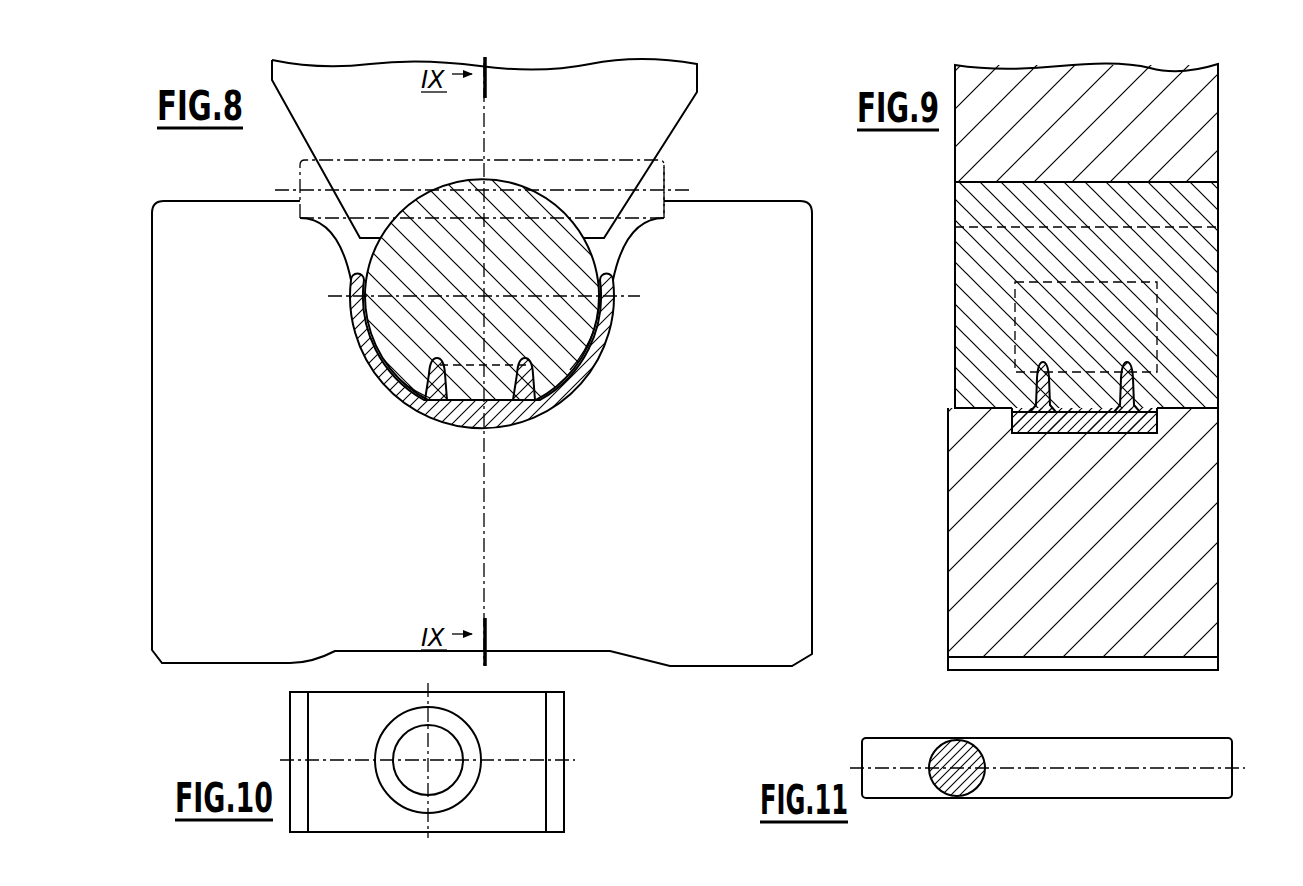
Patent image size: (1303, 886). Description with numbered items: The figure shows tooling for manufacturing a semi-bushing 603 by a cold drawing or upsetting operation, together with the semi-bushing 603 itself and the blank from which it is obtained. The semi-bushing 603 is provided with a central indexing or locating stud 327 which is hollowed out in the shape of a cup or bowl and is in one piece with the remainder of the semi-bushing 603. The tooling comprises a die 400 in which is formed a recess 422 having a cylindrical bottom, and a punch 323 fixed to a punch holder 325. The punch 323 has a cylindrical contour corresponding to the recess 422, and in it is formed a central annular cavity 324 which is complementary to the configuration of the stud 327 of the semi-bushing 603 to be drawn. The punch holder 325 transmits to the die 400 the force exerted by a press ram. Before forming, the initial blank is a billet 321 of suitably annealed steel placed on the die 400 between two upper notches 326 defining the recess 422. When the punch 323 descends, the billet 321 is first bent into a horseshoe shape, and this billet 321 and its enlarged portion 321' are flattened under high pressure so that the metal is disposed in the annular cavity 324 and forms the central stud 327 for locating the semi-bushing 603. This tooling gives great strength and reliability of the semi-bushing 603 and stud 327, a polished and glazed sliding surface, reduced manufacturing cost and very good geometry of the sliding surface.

In FIG. 8, the billet 321 is at (482, 163).
In FIG. 11, the billet 321 is at (1047, 751).
In FIG. 11, the enlarged portion 321' is at (936, 749).
In FIG. 8, the punch 323 is at (400, 315).
In FIG. 9, the punch 323 is at (1135, 305).
In FIG. 8, the central annular cavity 324 is at (420, 364).
In FIG. 8, the punch holder 325 is at (672, 97).
In FIG. 9, the punch holder 325 is at (1195, 96).
In FIG. 8, the upper notches 326 is at (656, 212).
In FIG. 8, the central indexing or locating stud 327 is at (432, 388).
In FIG. 9, the central indexing or locating stud 327 is at (1042, 380).
In FIG. 10, the central indexing or locating stud 327 is at (466, 742).
In FIG. 8, the die 400 is at (690, 668).
In FIG. 9, the die 400 is at (1115, 662).
In FIG. 8, the recess 422 is at (569, 358).
In FIG. 8, the semi-bushing 603 is at (385, 395).
In FIG. 9, the semi-bushing 603 is at (1010, 425).
In FIG. 10, the semi-bushing 603 is at (524, 685).